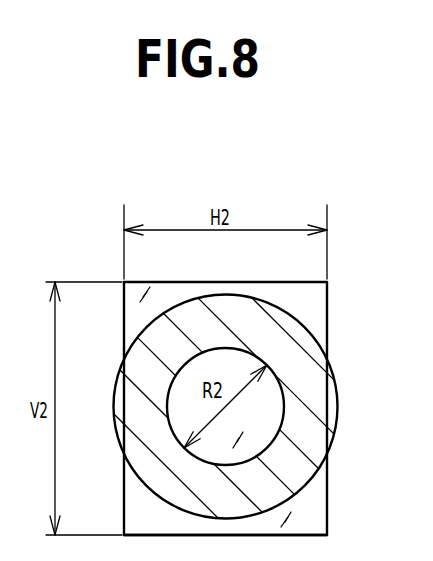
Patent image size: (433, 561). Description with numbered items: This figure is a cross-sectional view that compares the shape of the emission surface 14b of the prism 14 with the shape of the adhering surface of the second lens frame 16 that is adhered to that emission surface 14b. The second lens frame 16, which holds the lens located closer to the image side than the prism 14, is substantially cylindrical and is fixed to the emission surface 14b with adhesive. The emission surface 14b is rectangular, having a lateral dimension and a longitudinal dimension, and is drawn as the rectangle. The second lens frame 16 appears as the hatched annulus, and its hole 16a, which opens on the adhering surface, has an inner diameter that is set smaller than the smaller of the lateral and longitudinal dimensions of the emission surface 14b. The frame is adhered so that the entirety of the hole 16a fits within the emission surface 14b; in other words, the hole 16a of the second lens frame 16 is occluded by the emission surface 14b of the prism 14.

The prism 14 is at (328, 305).
The emission surface 14b is at (315, 503).
The second lens frame 16 is at (340, 390).
The hole 16a is at (283, 397).